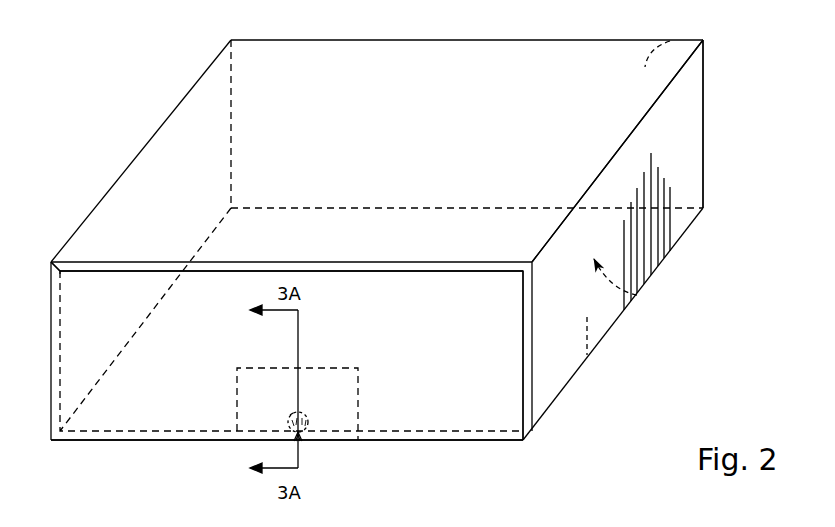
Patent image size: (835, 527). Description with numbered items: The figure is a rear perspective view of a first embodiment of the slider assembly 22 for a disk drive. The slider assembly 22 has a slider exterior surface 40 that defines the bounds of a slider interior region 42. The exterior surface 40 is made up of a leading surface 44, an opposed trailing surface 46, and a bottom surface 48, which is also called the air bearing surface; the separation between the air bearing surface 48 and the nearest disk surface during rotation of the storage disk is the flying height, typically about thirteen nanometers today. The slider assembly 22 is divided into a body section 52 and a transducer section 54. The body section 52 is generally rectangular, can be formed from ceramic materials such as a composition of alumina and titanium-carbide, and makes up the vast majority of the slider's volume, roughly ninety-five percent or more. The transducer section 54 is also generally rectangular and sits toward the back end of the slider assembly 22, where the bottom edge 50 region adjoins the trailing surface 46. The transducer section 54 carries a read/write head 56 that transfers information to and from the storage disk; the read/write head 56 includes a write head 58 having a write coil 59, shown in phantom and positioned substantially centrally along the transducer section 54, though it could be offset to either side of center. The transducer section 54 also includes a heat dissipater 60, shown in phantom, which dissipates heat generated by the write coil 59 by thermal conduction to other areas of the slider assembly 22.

The slider assembly 22 is at (637, 347).
The slider exterior surface 40 is at (656, 250).
The slider interior region 42 is at (627, 300).
The leading surface 44 is at (670, 41).
The trailing surface 46 is at (498, 402).
The bottom surface 48 is at (587, 358).
The bottom edge 50 is at (523, 441).
The body section 52 is at (148, 139).
The transducer section 54 is at (48, 266).
The read/write head 56 is at (307, 446).
The write head 58 is at (296, 437).
The write coil 59 is at (290, 415).
The heat dissipater 60 is at (340, 408).